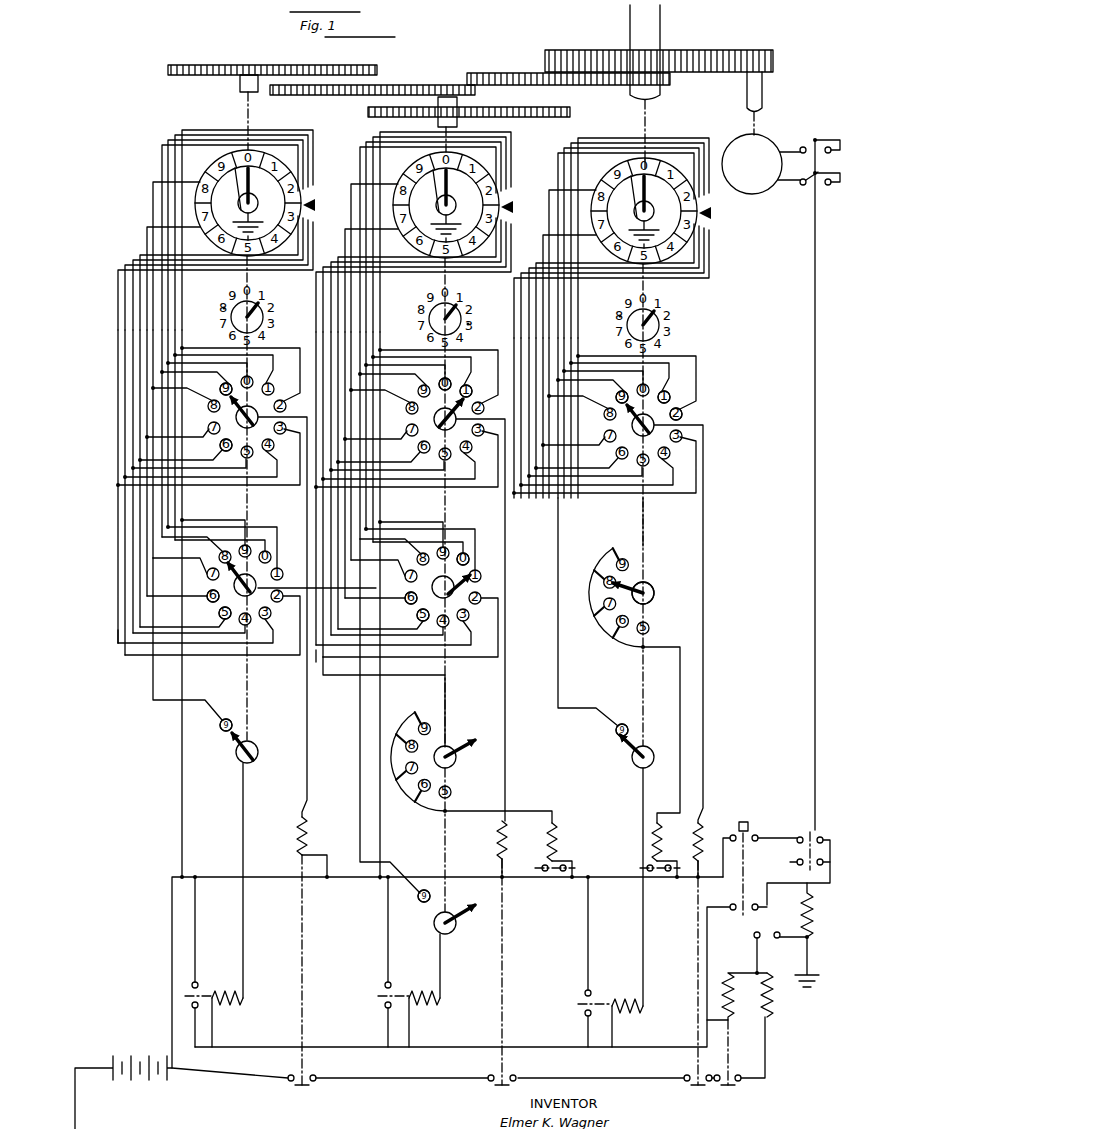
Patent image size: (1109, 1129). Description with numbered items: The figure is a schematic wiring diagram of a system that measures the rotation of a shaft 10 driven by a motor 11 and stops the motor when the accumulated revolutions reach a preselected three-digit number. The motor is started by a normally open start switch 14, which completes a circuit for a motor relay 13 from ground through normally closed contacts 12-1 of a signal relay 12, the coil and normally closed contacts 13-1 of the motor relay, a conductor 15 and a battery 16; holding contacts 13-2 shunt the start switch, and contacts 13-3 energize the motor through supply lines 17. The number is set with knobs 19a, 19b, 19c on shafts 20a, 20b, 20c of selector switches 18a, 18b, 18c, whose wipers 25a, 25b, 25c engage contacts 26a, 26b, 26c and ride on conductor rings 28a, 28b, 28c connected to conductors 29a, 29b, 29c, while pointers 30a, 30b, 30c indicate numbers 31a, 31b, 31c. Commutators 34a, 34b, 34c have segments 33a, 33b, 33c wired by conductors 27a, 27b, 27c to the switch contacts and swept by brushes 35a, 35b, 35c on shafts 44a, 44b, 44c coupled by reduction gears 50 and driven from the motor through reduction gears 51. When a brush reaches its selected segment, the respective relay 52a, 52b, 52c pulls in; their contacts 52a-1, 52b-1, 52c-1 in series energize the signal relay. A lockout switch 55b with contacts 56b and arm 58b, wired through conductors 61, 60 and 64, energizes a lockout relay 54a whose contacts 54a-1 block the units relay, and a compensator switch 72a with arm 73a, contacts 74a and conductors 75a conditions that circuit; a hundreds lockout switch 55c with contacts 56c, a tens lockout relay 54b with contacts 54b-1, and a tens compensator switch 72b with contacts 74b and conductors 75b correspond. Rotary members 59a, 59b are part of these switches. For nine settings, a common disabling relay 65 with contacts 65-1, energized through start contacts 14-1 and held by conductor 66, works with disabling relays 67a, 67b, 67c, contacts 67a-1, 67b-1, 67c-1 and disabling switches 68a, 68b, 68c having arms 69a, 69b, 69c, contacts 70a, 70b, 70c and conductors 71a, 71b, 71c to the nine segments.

The shaft 10 is at (632, 20).
The motor 11 is at (770, 142).
The signal relay 12 is at (772, 1017).
The normally closed contacts 12-1 is at (780, 941).
The motor relay 13 is at (803, 920).
The normally closed contacts 13-1 is at (817, 834).
The normally open contacts 13-2 is at (797, 861).
The normally open contacts 13-3 is at (803, 186).
The start switch 14 is at (762, 822).
The normally open contacts 14-1 is at (745, 913).
The conductor 15 is at (172, 946).
The battery 16 is at (128, 1057).
The supply lines 17 is at (833, 185).
The units selector switch 18a is at (635, 505).
The tens selector switch 18b is at (417, 502).
The hundreds selector switch 18c is at (285, 370).
The knob 19a is at (661, 323).
The knob 19b is at (460, 317).
The knob 19c is at (268, 310).
The shaft 20a is at (665, 523).
The wiper shaft 20b is at (407, 576).
The shaft 20c is at (250, 500).
The wiper 25a is at (605, 393).
The wiper 25b is at (481, 388).
The wiper 25c is at (219, 389).
The contacts 26a is at (697, 398).
The contacts 26b is at (458, 376).
The contacts 26c is at (222, 447).
The conductors 27a is at (611, 318).
The conductors 27b is at (413, 505).
The conductors 27c is at (122, 272).
The conductor ring 28a is at (614, 420).
The conductor ring 28b is at (424, 413).
The conductor ring 28c is at (236, 417).
The conductor 29a is at (700, 624).
The conductor 29b is at (498, 620).
The conductor 29c is at (307, 780).
The pointer 30a is at (612, 303).
The pointer 30b is at (488, 317).
The pointer 30c is at (224, 306).
The numbers 31a is at (674, 303).
The numbers 31b is at (470, 299).
The numbers 31c is at (262, 297).
The segments 33a is at (719, 213).
The segments 33b is at (522, 207).
The segments 33c is at (322, 206).
The units commutator 34a is at (644, 190).
The tens commutator 34b is at (466, 198).
The hundreds commutator 34c is at (290, 157).
The brush 35a is at (658, 212).
The brush 35b is at (460, 206).
The brush 35c is at (262, 204).
The units shaft 44a is at (648, 108).
The tens shaft 44b is at (458, 126).
The hundreds shaft 44c is at (243, 108).
The reduction gears 50 is at (383, 70).
The reduction gears 51 is at (722, 52).
The units relay 52a is at (711, 935).
The tens relay 52b is at (482, 953).
The hundreds relay 52c is at (310, 839).
The normally open contacts 52a-1 is at (672, 1071).
The normally open contacts 52b-1 is at (523, 1071).
The normally open contacts 52c-1 is at (296, 1086).
The lockout relay 54a is at (636, 850).
The tens lockout relay 54b is at (524, 840).
The normally closed contacts 54a-1 is at (665, 885).
The normally closed contacts 54b-1 is at (550, 884).
The lockout switch 55b is at (500, 568).
The hundreds lockout switch 55c is at (230, 642).
The contacts 56b is at (406, 608).
The contacts 56c is at (212, 603).
The contact arm 58b is at (468, 551).
The switch hub 59a is at (658, 587).
The rotary switch 59b is at (402, 735).
The conductor 60 is at (401, 578).
The conductors 61 is at (114, 632).
The conductor 64 is at (661, 735).
The common disabling relay 65 is at (735, 1015).
The disabling contacts 65-1 is at (732, 1074).
The conductor 66 is at (652, 1046).
The units disabling relay 67a is at (624, 1007).
The tens disabling relay 67b is at (434, 990).
The hundreds disabling relay 67c is at (241, 1003).
The normally open contacts 67a-1 is at (575, 962).
The normally open contacts 67b-1 is at (369, 962).
The contacts 67c-1 is at (190, 997).
The units disabling multiple switch 68a is at (607, 865).
The disabling switch 68b is at (444, 868).
The hundreds disabling switch 68c is at (235, 758).
The contact arm 69a is at (619, 761).
The contact arm 69b is at (465, 920).
The arm 69c is at (232, 740).
The contacts 70a is at (590, 736).
The contacts 70b is at (414, 904).
The contacts 70c is at (220, 726).
The conductor 71a is at (576, 612).
The conductor 71b is at (377, 716).
The conductor 71c is at (151, 686).
The compensator switch 72a is at (651, 562).
The tens compensator switch 72b is at (470, 768).
The contact arm 73a is at (621, 591).
The contacts 74a is at (638, 584).
The contacts 74b is at (416, 714).
The conductors 75a is at (597, 625).
The conductors 75b is at (402, 791).